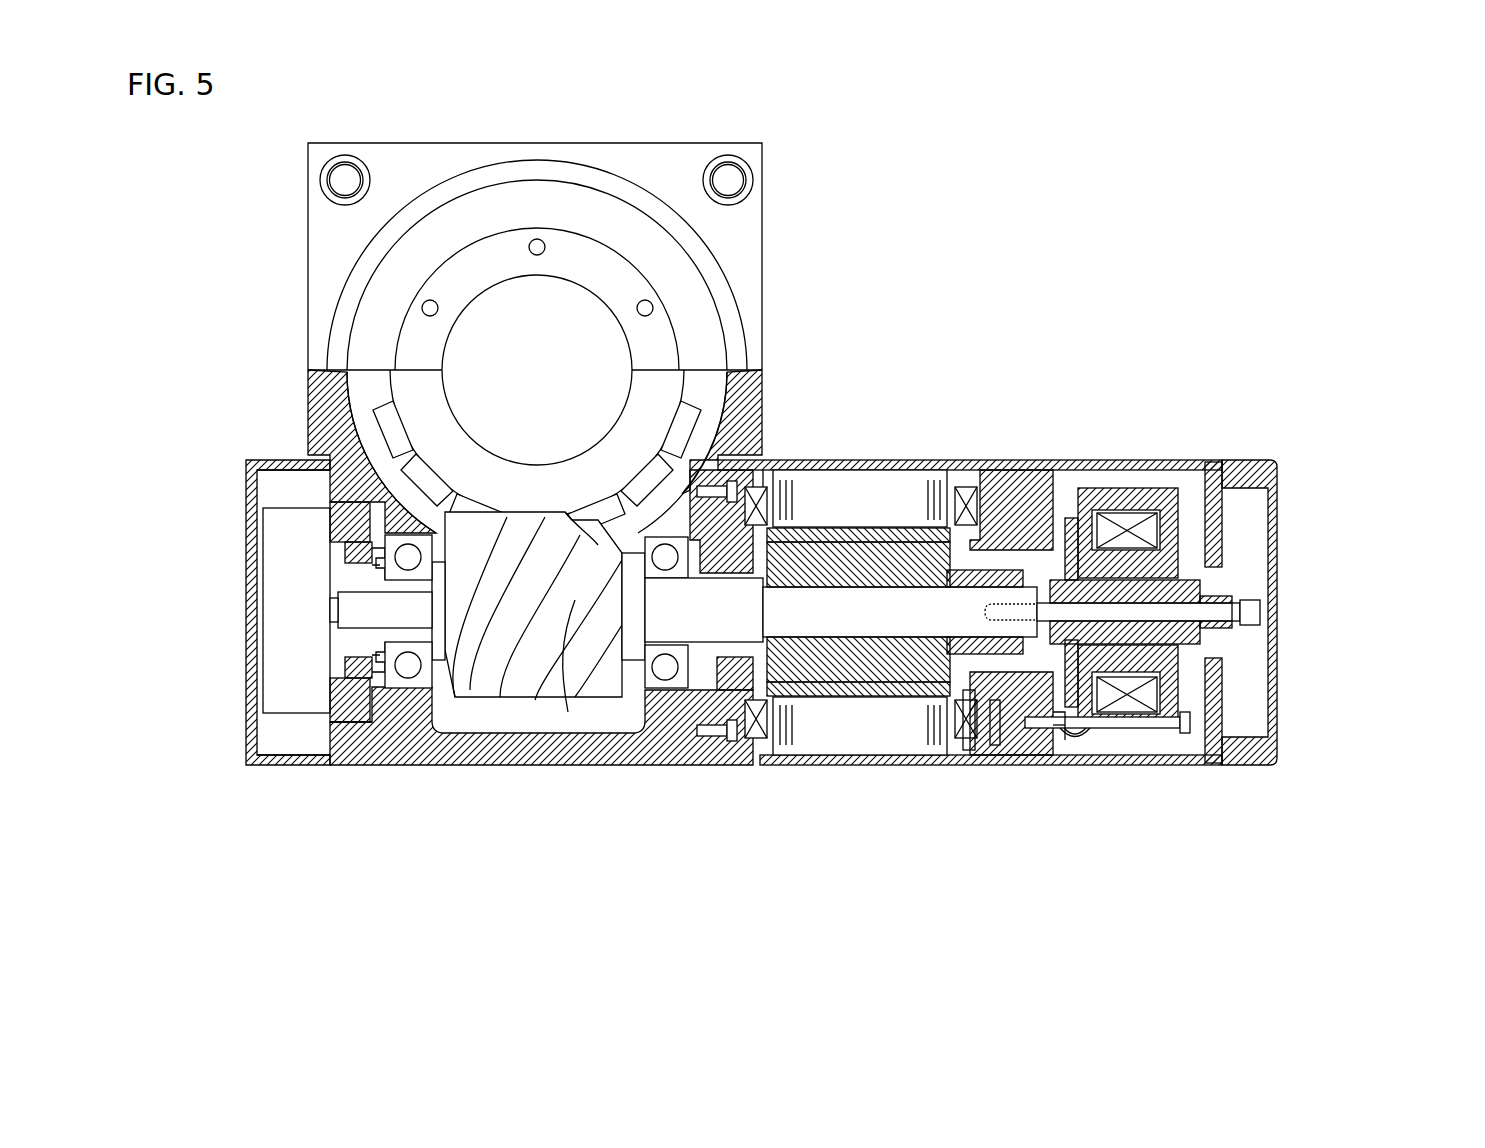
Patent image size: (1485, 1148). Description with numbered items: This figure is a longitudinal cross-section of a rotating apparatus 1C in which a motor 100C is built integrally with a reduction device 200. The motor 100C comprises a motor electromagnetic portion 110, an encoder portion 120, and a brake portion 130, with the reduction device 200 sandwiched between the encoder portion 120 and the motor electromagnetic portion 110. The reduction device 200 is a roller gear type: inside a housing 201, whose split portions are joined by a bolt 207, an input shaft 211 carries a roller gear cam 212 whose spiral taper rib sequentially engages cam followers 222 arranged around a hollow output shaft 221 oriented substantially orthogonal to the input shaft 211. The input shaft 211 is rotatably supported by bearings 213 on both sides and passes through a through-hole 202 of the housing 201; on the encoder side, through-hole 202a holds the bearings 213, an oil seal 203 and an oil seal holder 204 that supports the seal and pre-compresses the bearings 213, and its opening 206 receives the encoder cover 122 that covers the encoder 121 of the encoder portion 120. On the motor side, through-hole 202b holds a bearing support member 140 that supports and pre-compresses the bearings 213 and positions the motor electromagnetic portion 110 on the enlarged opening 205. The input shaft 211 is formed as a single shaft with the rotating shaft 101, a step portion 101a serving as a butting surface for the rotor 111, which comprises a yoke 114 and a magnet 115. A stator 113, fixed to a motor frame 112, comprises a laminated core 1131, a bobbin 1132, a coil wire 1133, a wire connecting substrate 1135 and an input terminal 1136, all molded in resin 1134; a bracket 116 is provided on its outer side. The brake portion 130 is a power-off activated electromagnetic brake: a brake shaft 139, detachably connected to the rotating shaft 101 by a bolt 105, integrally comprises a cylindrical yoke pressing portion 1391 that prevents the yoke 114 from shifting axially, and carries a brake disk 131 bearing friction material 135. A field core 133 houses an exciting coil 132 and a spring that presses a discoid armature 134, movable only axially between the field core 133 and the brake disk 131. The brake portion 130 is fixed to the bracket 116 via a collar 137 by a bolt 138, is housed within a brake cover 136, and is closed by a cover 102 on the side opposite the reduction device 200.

The rotating apparatus 1C is at (1178, 120).
The motor 100C is at (1366, 405).
The reduction device 200 is at (811, 155).
The housing 201 is at (301, 187).
The bolt 207 is at (347, 175).
The output shaft 221 is at (490, 258).
The cam follower 222 is at (365, 432).
The opening 206 is at (303, 468).
The through-hole 202 is at (489, 735).
The through-hole 202a is at (368, 548).
The through-hole 202b is at (571, 719).
The encoder 121 is at (280, 556).
The oil seal 203 is at (350, 573).
The encoder cover 122 is at (246, 672).
The oil seal holder 204 is at (330, 700).
The bearings 213 is at (417, 690).
The roller gear cam 212 is at (568, 745).
The input shaft 211 is at (700, 692).
The bearing support member 140 is at (726, 612).
The step portion 101a is at (778, 640).
The rotating shaft 101 is at (1010, 589).
The motor frame 112 is at (953, 765).
The opening 205 is at (740, 490).
The stator 113 is at (891, 510).
The laminated core 1131 is at (882, 502).
The bobbin 1132 is at (957, 465).
The coil wire 1133 is at (965, 470).
The resin 1134 is at (996, 523).
The rotor 111 is at (895, 688).
The magnet 115 is at (807, 692).
The yoke 114 is at (882, 669).
The bracket 116 is at (1037, 470).
The wire connecting substrate 1135 is at (978, 752).
The input terminal 1136 is at (1000, 748).
The brake portion 130 is at (1128, 639).
The yoke pressing portion 1391 is at (1048, 582).
The brake disk 131 is at (1070, 540).
The field core 133 is at (1150, 525).
The exciting coil 132 is at (1140, 518).
The bolt 138 is at (1185, 745).
The collar 137 is at (1078, 740).
The armature 134 is at (1092, 735).
The friction material 135 is at (1073, 763).
The brake cover 136 is at (1224, 508).
The cover 102 is at (1277, 745).
The bolt 105 is at (1258, 610).
The brake shaft 139 is at (1233, 628).
The encoder portion 120 is at (246, 875).
The motor electromagnetic portion 110 is at (1057, 875).